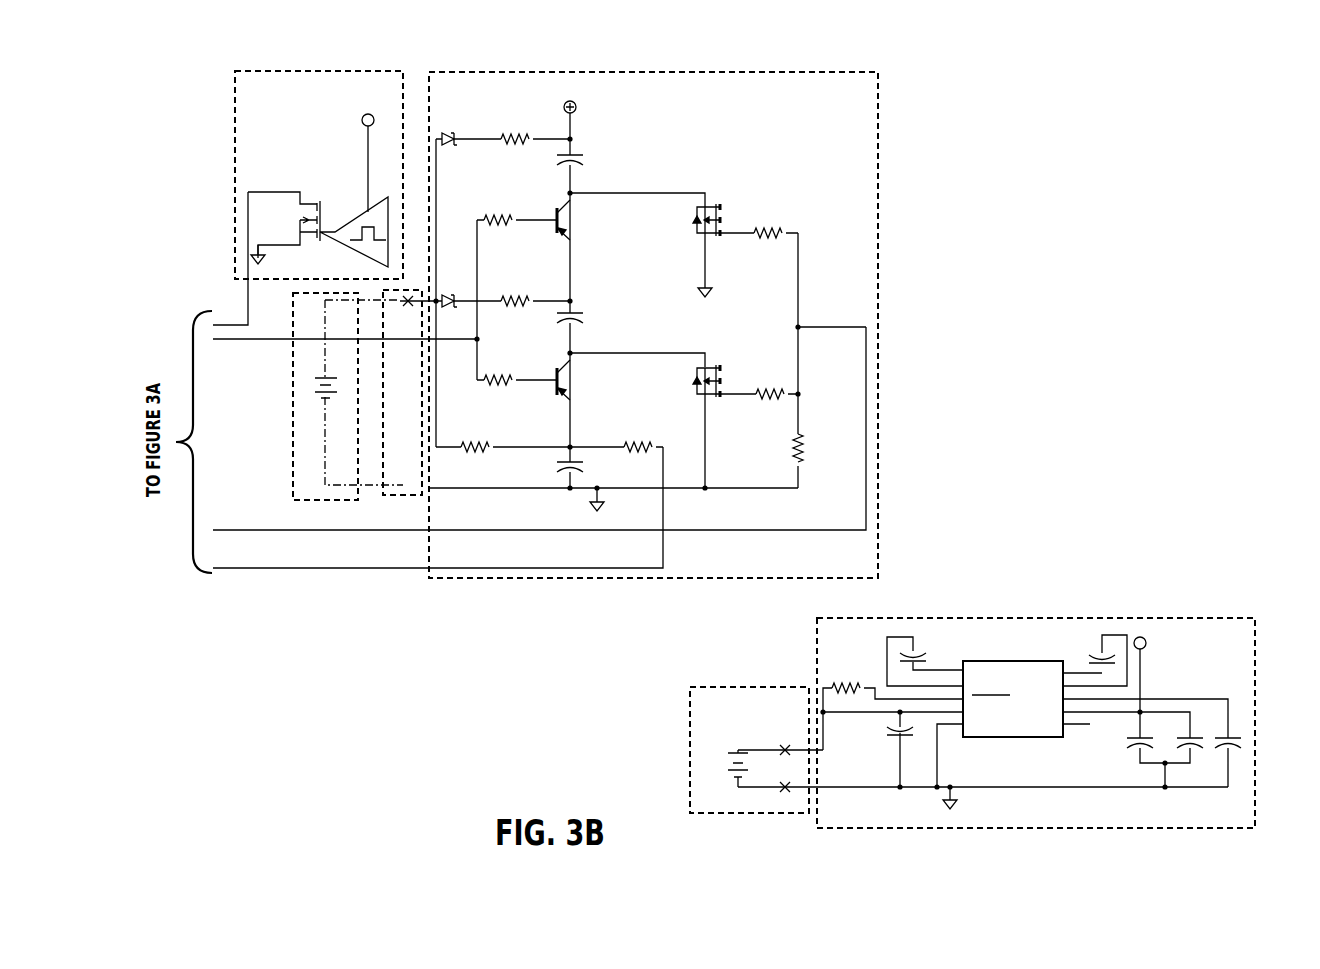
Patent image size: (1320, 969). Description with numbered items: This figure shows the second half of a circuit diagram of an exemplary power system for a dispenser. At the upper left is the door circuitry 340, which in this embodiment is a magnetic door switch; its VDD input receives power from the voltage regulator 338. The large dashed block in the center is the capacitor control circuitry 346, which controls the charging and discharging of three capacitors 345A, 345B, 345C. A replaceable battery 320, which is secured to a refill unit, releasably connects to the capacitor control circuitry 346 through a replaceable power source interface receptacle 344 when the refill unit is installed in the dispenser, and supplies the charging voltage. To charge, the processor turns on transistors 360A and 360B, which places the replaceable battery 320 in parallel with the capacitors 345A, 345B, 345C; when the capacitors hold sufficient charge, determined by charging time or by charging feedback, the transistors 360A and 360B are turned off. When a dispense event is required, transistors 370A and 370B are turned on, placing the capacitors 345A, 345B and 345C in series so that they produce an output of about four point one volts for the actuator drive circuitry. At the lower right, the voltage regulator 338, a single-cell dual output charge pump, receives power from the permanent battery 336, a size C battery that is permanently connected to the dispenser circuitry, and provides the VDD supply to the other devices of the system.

The door circuitry 340 is at (300, 71).
The capacitor control circuitry 346 is at (879, 126).
The capacitor 345A is at (583, 155).
The capacitor 345B is at (578, 324).
The capacitor 345C is at (565, 461).
The transistor 360A is at (718, 220).
The transistor 360B is at (718, 381).
The transistor 370A is at (562, 228).
The transistor 370B is at (562, 388).
The replaceable battery 320 is at (293, 450).
The replaceable power source interface receptacle 344 is at (405, 497).
The voltage regulator 338 is at (1037, 618).
The permanent battery 336 is at (739, 687).